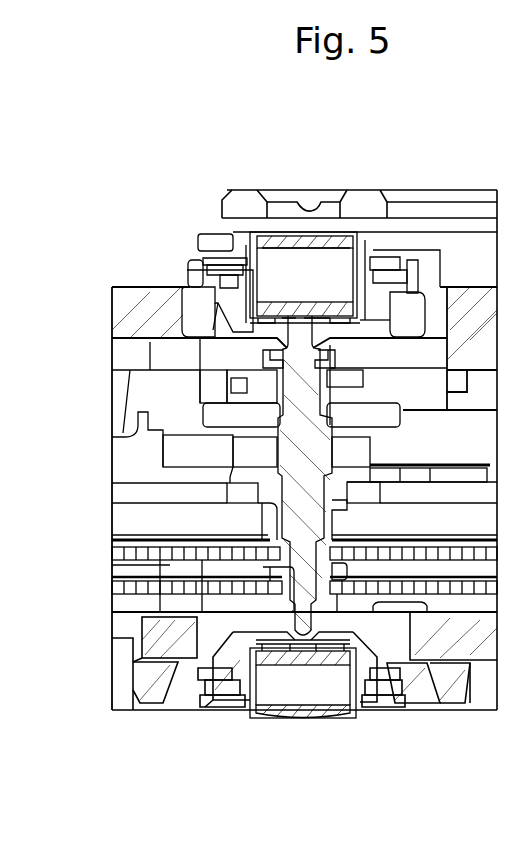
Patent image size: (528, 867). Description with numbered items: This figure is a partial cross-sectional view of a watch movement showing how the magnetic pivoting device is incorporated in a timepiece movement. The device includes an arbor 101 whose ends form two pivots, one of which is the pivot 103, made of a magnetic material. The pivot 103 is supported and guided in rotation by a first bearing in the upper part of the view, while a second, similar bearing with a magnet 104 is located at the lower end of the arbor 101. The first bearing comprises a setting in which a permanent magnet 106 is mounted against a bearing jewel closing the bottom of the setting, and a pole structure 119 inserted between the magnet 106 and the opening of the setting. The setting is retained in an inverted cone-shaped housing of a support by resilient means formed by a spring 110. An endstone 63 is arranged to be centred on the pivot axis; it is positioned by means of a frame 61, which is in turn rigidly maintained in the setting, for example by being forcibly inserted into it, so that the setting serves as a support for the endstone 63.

The frame 61 is at (338, 303).
The endstone 63 is at (262, 318).
The arbor 101 is at (277, 522).
The pivot 103 is at (303, 351).
The magnet 104 is at (322, 698).
The permanent magnet 106 is at (321, 285).
The spring 110 is at (374, 264).
The pole structure 119 is at (271, 300).